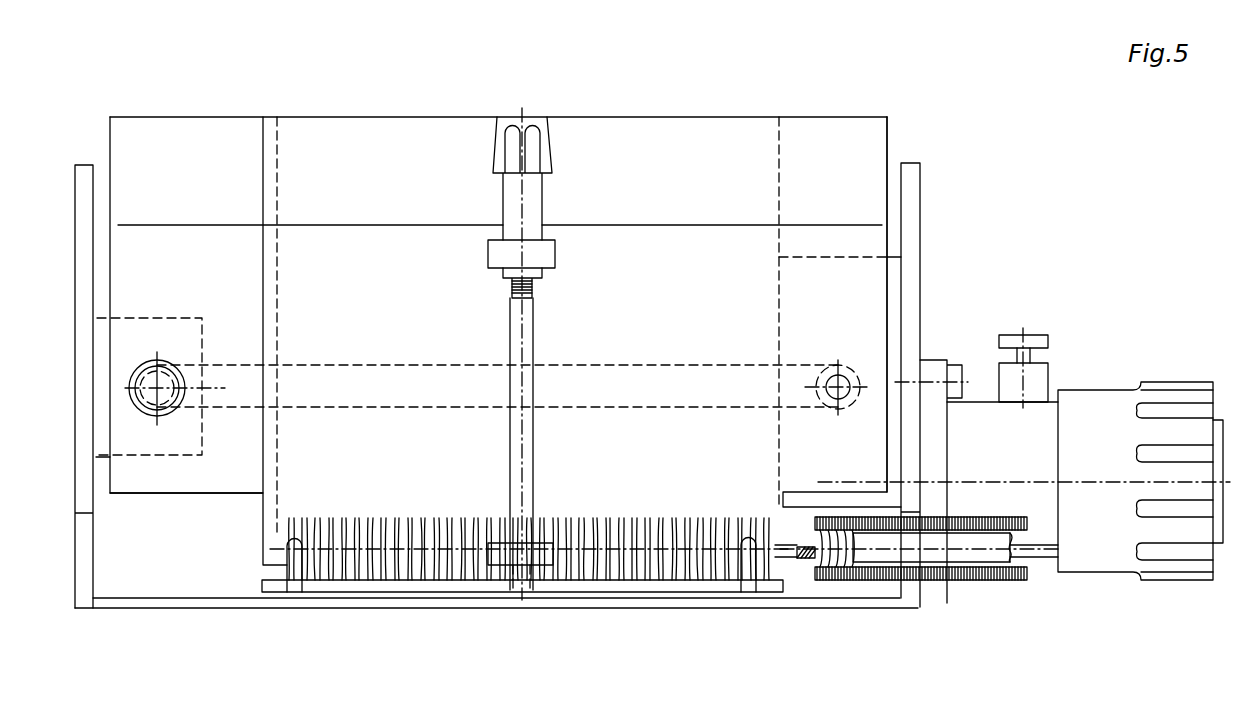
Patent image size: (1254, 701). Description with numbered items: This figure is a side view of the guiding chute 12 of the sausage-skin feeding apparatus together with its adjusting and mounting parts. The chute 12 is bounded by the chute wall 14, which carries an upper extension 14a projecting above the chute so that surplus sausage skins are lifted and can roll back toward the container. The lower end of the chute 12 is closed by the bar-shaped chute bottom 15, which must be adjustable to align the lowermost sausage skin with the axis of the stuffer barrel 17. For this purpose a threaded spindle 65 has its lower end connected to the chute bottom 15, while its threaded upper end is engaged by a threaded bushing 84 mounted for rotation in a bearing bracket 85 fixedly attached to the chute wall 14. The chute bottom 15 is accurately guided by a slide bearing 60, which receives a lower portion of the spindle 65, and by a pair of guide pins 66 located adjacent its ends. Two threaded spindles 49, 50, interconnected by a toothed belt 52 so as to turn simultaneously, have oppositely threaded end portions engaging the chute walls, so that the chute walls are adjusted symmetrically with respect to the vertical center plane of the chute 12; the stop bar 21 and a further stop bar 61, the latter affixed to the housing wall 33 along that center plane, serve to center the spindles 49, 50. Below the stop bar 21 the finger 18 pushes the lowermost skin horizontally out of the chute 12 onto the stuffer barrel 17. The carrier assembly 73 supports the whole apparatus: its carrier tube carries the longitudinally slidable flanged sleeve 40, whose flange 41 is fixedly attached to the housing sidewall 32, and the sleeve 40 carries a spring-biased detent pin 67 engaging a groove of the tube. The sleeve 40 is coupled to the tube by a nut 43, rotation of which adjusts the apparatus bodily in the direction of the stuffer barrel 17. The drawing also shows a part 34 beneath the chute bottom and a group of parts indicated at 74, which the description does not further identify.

The guiding chute 12 is at (566, 340).
The chute wall 14 is at (875, 360).
The upper extension of chute wall 14a is at (757, 128).
The chute bottom 15 is at (632, 583).
The stuffer barrel 17 is at (885, 550).
The finger 18 is at (813, 575).
The stop bar 21 is at (893, 318).
The housing sidewall 32 is at (910, 230).
The housing wall 33 is at (80, 168).
The base plate 34 is at (322, 600).
The flanged sleeve 40 is at (1047, 553).
The flange 41 is at (937, 593).
The nut 43 is at (1110, 555).
The threaded spindle 49 is at (167, 378).
The threaded spindle 50 is at (833, 380).
The toothed belt 52 is at (388, 364).
The slide bearing 60 is at (548, 548).
The stop bar 61 is at (190, 478).
The threaded spindle 65 is at (527, 352).
The guide pins 66 is at (292, 592).
The detent pin 67 is at (1037, 390).
The carrier assembly 73 is at (1024, 467).
The support assembly 74 is at (887, 338).
The threaded bushing 84 is at (535, 200).
The bearing bracket 85 is at (548, 258).